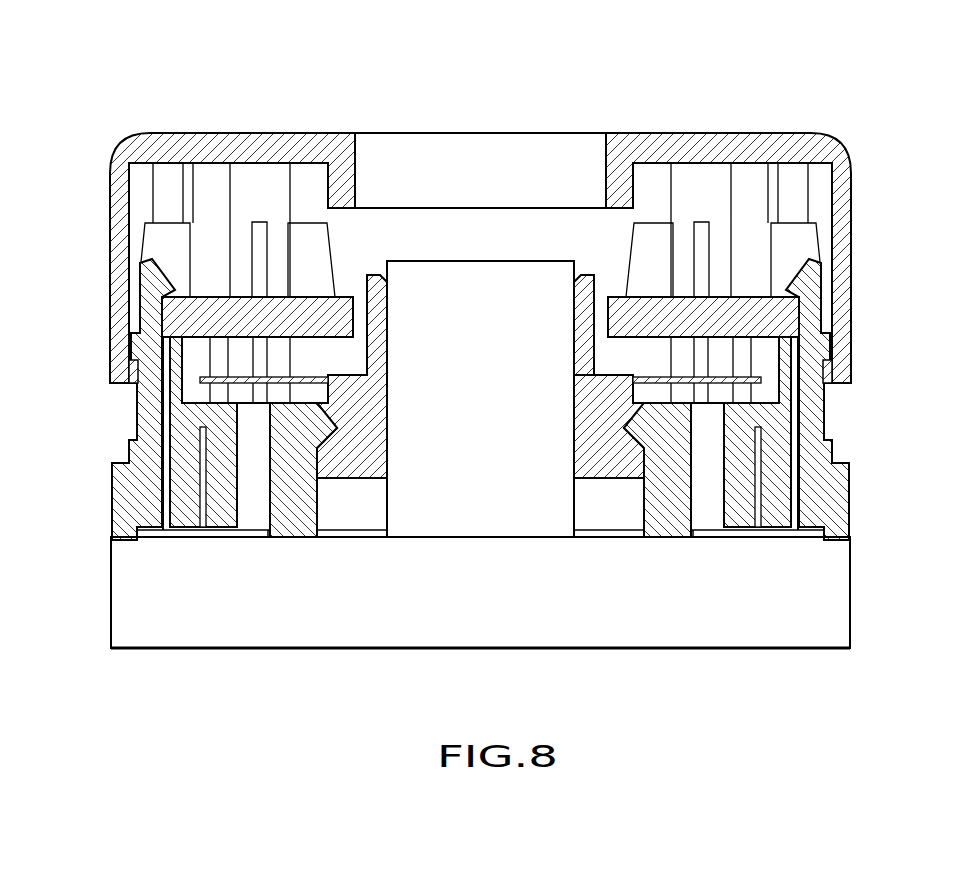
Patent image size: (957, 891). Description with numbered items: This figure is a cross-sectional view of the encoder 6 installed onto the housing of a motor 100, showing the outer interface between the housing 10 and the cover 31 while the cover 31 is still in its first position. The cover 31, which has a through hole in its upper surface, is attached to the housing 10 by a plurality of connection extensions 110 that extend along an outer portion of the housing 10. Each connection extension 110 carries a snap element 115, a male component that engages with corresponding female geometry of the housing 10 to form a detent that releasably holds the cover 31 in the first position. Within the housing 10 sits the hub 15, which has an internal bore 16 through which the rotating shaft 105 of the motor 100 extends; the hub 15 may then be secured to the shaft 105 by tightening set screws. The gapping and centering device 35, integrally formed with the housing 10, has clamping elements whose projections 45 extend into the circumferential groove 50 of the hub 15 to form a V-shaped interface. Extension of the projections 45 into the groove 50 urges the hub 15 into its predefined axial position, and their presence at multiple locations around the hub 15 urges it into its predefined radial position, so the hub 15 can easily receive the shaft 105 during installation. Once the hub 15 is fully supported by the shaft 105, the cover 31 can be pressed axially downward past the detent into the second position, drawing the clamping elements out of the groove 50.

The encoder 6 is at (436, 204).
The cover 31 is at (296, 140).
The connection extensions 110 is at (118, 281).
The snap element 115 is at (128, 370).
The housing 10 is at (137, 497).
The gapping and centering device 35 is at (288, 483).
The hub 15 is at (352, 455).
The internal bore 16 is at (573, 452).
The circumferential groove 50 is at (628, 437).
The projections 45 is at (632, 425).
The rotating shaft 105 is at (508, 413).
The motor 100 is at (508, 607).